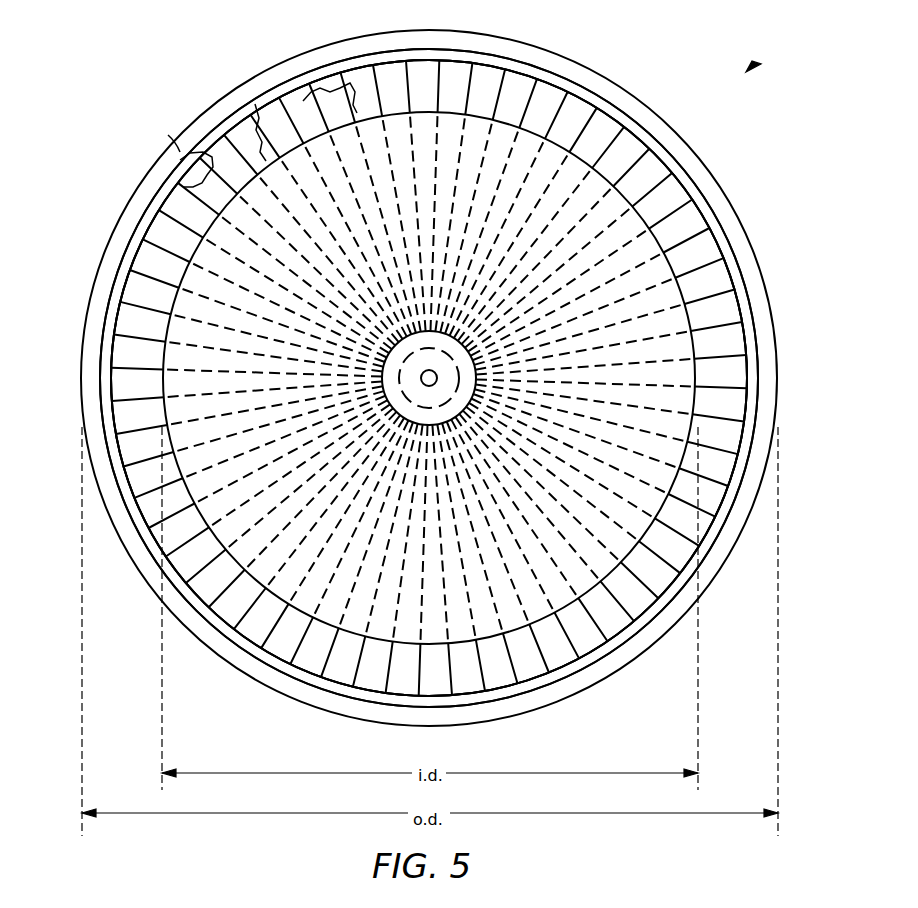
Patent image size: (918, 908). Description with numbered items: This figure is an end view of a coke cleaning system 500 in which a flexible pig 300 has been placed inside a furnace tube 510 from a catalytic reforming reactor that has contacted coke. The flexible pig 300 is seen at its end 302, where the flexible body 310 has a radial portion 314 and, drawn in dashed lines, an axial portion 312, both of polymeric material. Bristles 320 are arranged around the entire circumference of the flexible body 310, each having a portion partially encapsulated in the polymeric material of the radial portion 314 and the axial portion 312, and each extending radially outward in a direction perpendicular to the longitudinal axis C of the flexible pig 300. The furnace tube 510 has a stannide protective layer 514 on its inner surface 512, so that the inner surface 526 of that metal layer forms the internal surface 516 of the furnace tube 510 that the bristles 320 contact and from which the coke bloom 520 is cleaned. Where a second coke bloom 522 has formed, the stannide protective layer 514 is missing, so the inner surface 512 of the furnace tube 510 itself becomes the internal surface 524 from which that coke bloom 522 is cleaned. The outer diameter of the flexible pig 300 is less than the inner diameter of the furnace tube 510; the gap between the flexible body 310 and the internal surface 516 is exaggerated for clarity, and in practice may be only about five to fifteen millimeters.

The flexible pig 300 is at (252, 582).
The end 302 is at (573, 613).
The flexible body 310 is at (513, 137).
The axial portion 312 is at (456, 408).
The radial portion 314 is at (330, 617).
The bristles 320 is at (242, 150).
The coke cleaning system 500 is at (756, 66).
The furnace tube 510 is at (113, 233).
The inner surface 512 is at (90, 373).
The stannide protective layer 514 is at (119, 486).
The internal surface 516 is at (134, 513).
The coke bloom 520 is at (318, 86).
The coke bloom 522 is at (177, 138).
The internal surface 524 is at (195, 165).
The inner surface 526 is at (150, 553).
The longitudinal axis C is at (427, 370).